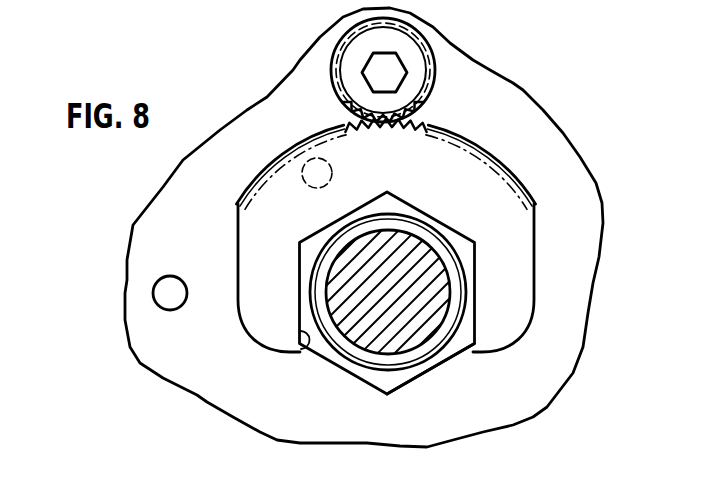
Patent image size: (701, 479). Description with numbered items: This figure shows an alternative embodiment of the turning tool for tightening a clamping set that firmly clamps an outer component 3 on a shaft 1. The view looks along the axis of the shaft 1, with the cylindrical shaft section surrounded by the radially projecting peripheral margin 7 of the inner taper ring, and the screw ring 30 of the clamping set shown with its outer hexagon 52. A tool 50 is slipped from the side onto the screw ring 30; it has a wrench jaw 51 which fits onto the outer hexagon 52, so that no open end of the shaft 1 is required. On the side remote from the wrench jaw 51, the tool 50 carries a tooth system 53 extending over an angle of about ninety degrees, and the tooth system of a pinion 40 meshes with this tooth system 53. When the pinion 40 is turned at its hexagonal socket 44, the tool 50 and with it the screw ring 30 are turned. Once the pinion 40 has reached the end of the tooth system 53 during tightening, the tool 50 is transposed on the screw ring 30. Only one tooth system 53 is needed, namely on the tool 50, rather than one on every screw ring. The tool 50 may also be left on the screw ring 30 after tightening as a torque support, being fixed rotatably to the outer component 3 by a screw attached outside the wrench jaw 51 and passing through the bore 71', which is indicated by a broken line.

The shaft 1 is at (338, 288).
The outer component 3 is at (552, 132).
The peripheral margin 7 is at (447, 263).
The screw ring 30 is at (389, 203).
The pinion 40 is at (431, 69).
The hexagonal socket 44 is at (364, 73).
The tool 50 is at (258, 339).
The wrench jaw 51 is at (313, 340).
The outer hexagon 52 is at (432, 367).
The tooth system 53 is at (473, 140).
The bore 71' is at (276, 163).